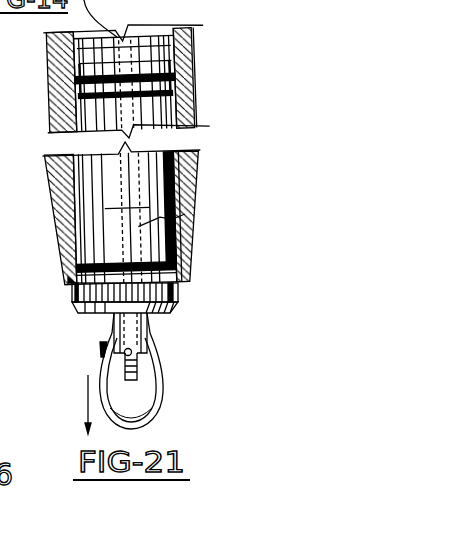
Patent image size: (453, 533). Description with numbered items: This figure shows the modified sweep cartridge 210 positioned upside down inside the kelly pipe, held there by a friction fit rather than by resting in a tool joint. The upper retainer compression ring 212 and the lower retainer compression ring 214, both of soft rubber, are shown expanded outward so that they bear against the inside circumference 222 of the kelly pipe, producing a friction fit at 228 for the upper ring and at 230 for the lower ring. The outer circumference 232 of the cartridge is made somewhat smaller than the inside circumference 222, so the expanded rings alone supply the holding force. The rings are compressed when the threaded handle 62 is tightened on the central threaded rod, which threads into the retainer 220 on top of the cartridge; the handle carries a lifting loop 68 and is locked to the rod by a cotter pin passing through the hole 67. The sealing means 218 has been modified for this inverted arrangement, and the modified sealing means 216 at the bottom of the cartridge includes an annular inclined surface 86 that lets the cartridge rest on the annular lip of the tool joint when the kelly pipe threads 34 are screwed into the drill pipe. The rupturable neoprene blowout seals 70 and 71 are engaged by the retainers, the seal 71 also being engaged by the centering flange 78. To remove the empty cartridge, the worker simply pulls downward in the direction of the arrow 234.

The kelly pipe threads 34 is at (62, 202).
The threaded handle 62 is at (110, 340).
The hole 67 is at (100, 360).
The lifting loop 68 is at (166, 392).
The rupturable neoprene blowout seal 70 is at (75, 97).
The rupturable neoprene blowout seal 71 is at (73, 285).
The centering flange 78 is at (183, 257).
The annular inclined surface 86 is at (178, 318).
The modified sweep cartridge 210 is at (137, 203).
The upper retainer compression ring 212 is at (182, 55).
The lower retainer compression ring 214 is at (185, 235).
The modified sealing means 216 is at (180, 306).
The sealing means 218 is at (183, 98).
The retainer 220 is at (193, 36).
The inside circumference 222 is at (107, 19).
The friction fit 228 is at (77, 78).
The friction fit 230 is at (68, 263).
The outer circumference 232 is at (77, 121).
The arrow 234 is at (88, 401).